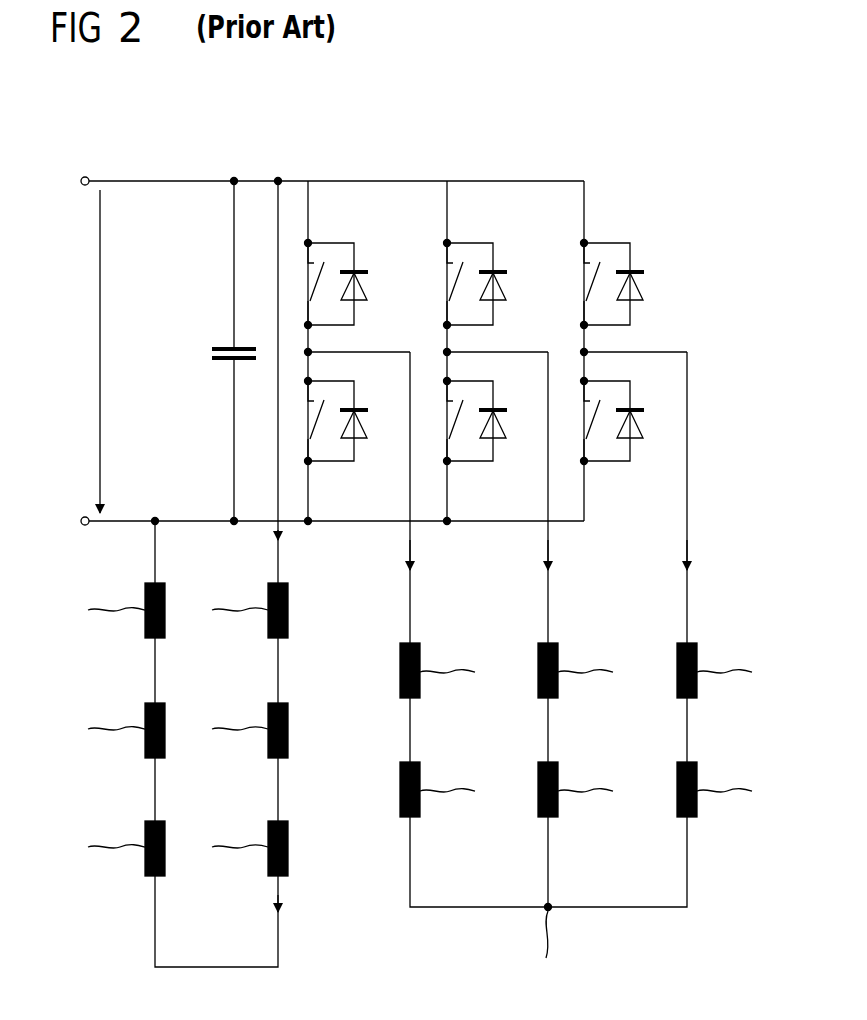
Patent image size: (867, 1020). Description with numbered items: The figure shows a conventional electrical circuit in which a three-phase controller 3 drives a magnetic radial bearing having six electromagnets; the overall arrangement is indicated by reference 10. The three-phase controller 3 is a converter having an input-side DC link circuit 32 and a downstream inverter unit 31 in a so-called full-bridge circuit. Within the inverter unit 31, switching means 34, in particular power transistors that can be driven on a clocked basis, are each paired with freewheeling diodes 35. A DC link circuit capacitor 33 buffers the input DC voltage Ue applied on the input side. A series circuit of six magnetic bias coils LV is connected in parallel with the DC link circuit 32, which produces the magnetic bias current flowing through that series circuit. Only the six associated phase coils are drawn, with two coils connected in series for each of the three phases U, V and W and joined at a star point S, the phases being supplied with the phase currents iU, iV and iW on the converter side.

The three-phase controller 3 is at (519, 129).
The drive arrangement 10 is at (719, 207).
The inverter unit 31 is at (582, 170).
The DC link circuit 32 is at (204, 209).
The DC link circuit capacitor 33 is at (224, 346).
The switching means 34 is at (306, 282).
The freewheeling diodes 35 is at (368, 283).